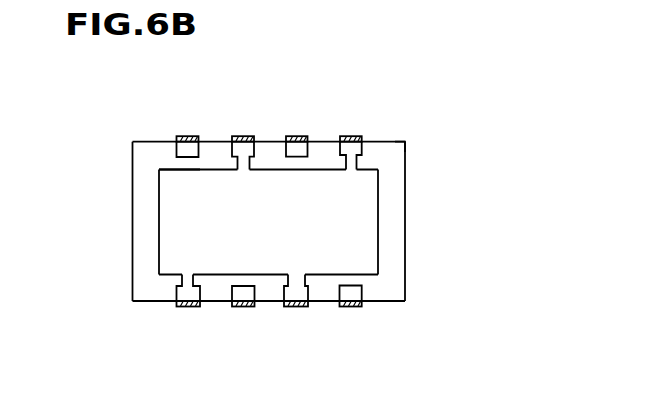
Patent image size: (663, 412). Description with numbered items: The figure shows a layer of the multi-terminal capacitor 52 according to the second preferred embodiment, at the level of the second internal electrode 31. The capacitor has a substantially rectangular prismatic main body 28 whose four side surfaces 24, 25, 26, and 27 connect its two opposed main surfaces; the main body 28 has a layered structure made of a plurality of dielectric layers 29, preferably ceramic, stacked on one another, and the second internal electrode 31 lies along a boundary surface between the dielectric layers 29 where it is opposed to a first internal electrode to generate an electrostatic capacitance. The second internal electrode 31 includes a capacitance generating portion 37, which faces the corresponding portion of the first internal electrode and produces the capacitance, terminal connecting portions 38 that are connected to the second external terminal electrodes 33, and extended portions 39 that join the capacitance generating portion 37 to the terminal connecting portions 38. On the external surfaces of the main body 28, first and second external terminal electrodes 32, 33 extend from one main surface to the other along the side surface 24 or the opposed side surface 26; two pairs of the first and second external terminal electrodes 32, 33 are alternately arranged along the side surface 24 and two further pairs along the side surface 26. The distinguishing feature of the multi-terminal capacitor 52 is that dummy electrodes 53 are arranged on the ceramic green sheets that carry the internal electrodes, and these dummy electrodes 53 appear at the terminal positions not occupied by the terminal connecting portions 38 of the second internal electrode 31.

The multi-terminal capacitor 52 is at (82, 92).
The side surface 24 is at (275, 142).
The side surface 25 is at (133, 248).
The side surface 26 is at (272, 306).
The side surface 27 is at (405, 225).
The main body 28 is at (407, 140).
The dielectric layer 29 is at (395, 189).
The second internal electrode 31 is at (152, 214).
The first external terminal electrode 32 is at (188, 136).
The second external terminal electrode 33 is at (242, 136).
The capacitance generating portion 37 is at (170, 188).
The terminal connecting portion 38 is at (354, 143).
The extended portion 39 is at (183, 281).
The dummy electrode 53 is at (182, 152).